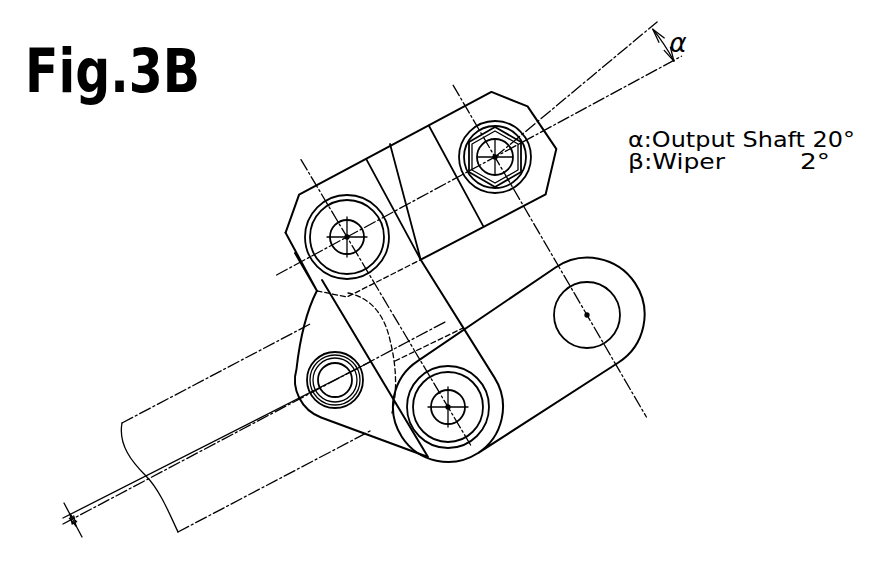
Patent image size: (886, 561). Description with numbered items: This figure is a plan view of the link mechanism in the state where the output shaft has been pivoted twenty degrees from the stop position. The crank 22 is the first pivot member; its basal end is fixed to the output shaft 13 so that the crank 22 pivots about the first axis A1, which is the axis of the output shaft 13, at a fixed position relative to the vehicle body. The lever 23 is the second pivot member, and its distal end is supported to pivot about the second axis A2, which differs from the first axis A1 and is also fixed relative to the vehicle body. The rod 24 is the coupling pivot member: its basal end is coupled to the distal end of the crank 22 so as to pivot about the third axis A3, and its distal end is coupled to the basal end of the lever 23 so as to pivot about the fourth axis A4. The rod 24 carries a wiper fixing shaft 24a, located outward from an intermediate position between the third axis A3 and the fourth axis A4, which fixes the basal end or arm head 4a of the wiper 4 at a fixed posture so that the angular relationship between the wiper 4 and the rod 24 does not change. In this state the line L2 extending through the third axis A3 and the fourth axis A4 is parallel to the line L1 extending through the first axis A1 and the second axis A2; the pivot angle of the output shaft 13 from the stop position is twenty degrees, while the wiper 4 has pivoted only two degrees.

The crank 22 is at (413, 153).
The output shaft 13 is at (499, 128).
The first axis A1 is at (519, 158).
The third axis A3 is at (345, 237).
The line L1 is at (540, 228).
The line L2 is at (452, 313).
The lever 23 is at (563, 399).
The second axis A2 is at (587, 315).
The fourth axis A4 is at (448, 425).
The rod 24 is at (345, 312).
The wiper fixing shaft 24a is at (318, 378).
The wiper 4 is at (163, 400).
The basal end (arm head) 4a is at (340, 447).